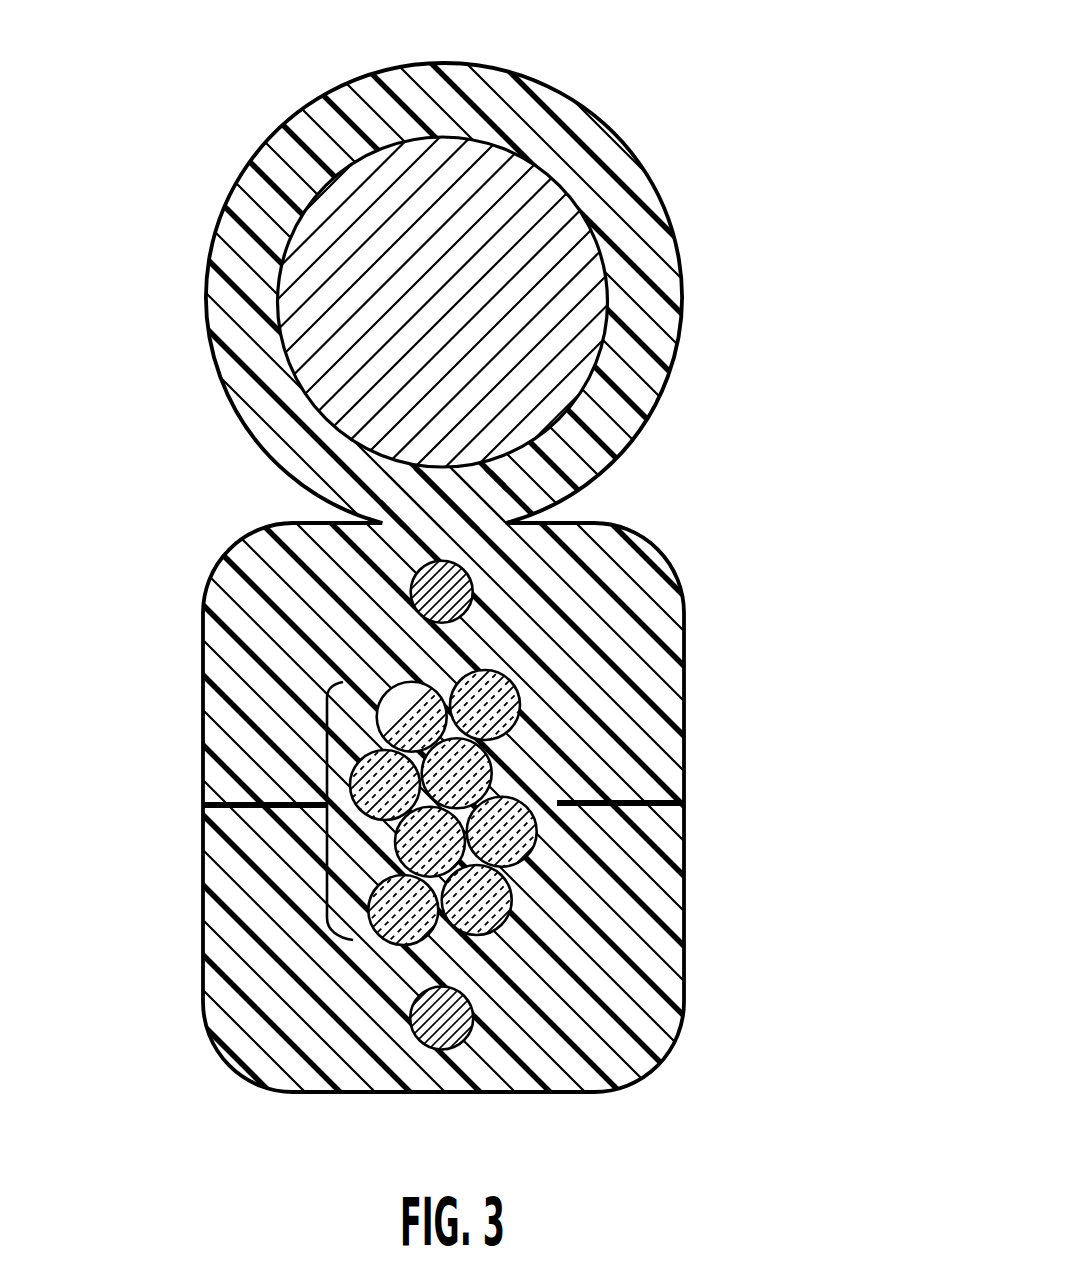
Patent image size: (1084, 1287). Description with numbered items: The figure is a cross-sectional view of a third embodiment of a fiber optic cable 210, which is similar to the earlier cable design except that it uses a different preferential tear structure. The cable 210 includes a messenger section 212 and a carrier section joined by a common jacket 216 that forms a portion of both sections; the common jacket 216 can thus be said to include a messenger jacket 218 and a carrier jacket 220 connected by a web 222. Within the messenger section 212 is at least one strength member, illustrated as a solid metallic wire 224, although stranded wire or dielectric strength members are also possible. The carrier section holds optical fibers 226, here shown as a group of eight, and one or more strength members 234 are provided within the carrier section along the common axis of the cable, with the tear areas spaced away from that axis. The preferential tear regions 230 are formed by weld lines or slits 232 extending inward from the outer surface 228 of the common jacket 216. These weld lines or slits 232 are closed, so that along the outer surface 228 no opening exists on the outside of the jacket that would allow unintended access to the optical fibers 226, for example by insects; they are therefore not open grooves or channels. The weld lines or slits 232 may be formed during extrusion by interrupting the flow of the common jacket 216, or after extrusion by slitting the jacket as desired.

The fiber optic cable 210 is at (794, 158).
The messenger section 212 is at (623, 114).
The common jacket 216 is at (290, 524).
The messenger jacket 218 is at (237, 361).
The carrier jacket 220 is at (232, 585).
The web 222 is at (522, 519).
The solid metallic wire 224 is at (520, 278).
The optical fibers 226 is at (327, 842).
The outer surface 228 is at (203, 947).
The preferential tear regions 230 is at (203, 806).
The weld lines or slits 232 is at (243, 797).
The strength members 234 is at (438, 596).